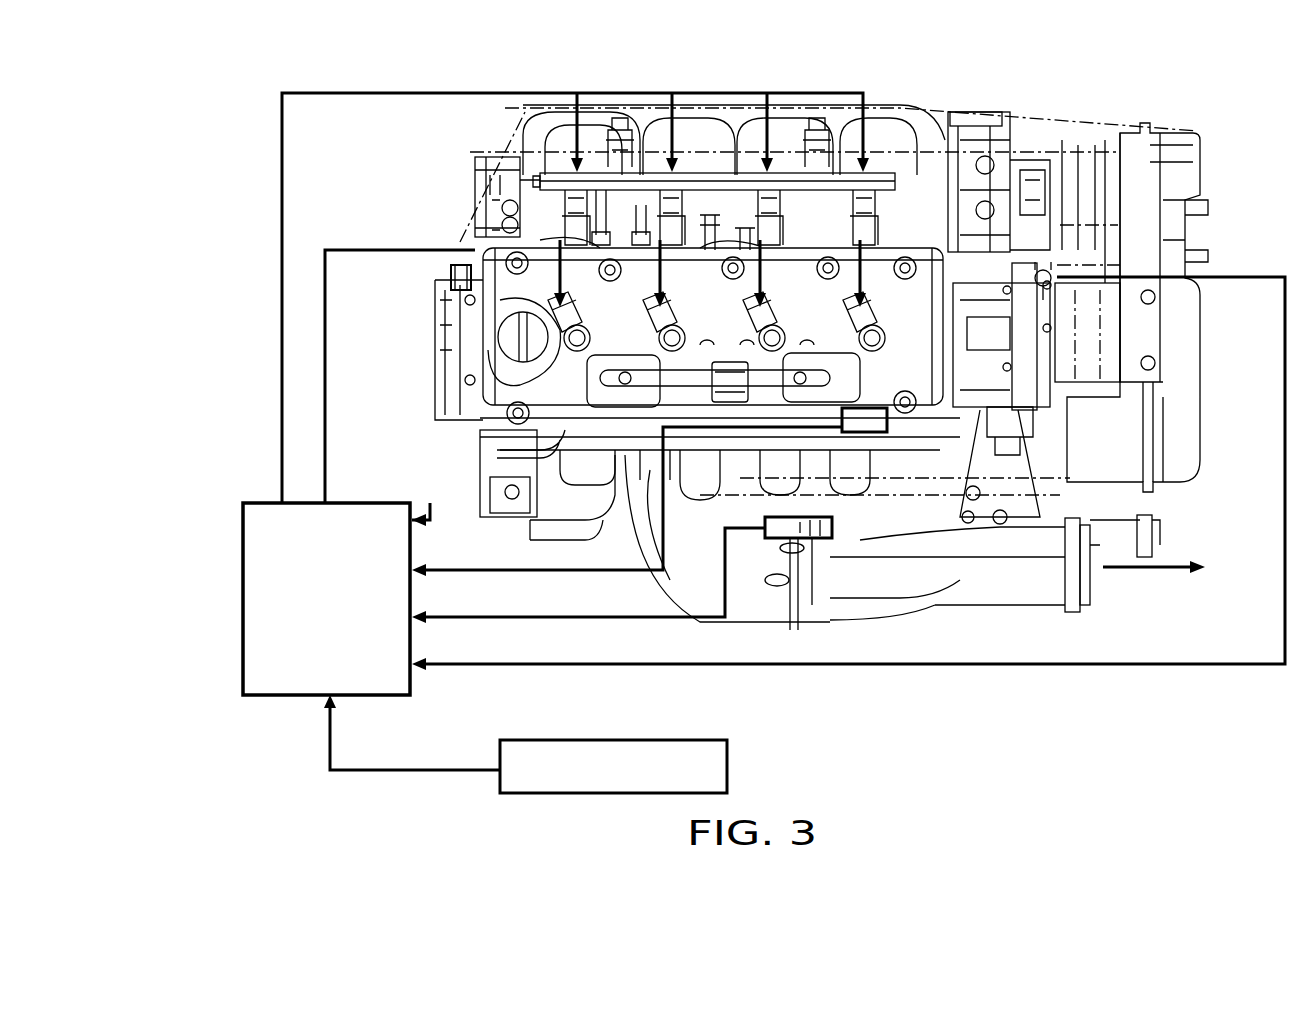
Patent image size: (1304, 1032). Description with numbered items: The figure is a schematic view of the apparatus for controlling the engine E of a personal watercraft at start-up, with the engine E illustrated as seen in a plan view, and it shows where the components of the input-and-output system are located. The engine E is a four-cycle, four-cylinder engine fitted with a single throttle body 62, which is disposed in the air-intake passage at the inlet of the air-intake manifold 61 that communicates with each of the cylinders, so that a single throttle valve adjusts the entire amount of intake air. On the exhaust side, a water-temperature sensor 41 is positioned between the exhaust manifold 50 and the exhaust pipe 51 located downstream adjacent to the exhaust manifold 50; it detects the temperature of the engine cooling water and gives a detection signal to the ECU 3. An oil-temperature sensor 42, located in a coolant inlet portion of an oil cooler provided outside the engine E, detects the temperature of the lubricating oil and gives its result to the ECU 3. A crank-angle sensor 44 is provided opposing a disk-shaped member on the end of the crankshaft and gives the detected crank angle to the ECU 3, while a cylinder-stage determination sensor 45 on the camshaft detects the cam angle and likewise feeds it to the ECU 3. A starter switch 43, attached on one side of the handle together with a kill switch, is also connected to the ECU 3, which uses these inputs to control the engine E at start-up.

The ECU 3 is at (243, 600).
The water-temperature sensor 41 is at (773, 540).
The oil-temperature sensor 42 is at (1046, 270).
The starter switch 43 is at (727, 767).
The crank-angle sensor 44 is at (455, 268).
The cylinder-stage determination sensor 45 is at (862, 433).
The exhaust manifold 50 is at (636, 583).
The exhaust pipe 51 is at (1030, 607).
The air-intake manifold 61 is at (882, 130).
The throttle body 62 is at (1005, 122).
The engine E is at (970, 106).